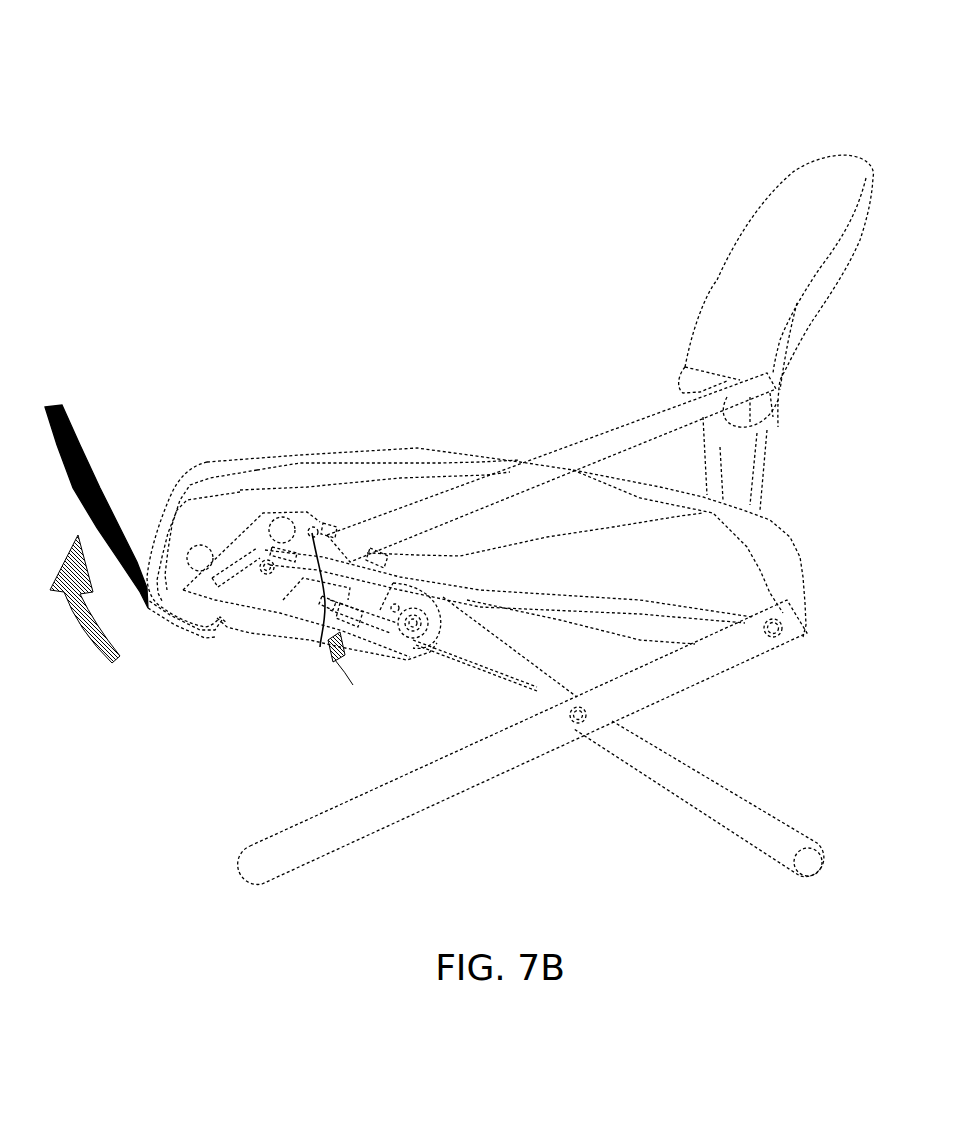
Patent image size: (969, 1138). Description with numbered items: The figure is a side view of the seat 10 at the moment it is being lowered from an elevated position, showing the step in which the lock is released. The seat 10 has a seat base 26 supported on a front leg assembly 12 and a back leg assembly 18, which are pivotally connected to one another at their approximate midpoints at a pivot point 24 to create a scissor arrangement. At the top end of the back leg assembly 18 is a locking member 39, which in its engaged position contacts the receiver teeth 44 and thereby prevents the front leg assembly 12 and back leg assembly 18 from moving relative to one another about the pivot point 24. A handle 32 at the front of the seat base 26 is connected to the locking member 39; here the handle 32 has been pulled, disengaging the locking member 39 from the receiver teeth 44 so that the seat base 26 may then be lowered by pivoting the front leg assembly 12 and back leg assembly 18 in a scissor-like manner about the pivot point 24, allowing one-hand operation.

The seat 10 is at (815, 97).
The front leg assembly 12 is at (387, 800).
The back leg assembly 18 is at (708, 793).
The pivot point 24 is at (578, 722).
The seat base 26 is at (333, 473).
The handle 32 is at (62, 428).
The locking member 39 is at (332, 607).
The receiver teeth 44 is at (337, 622).